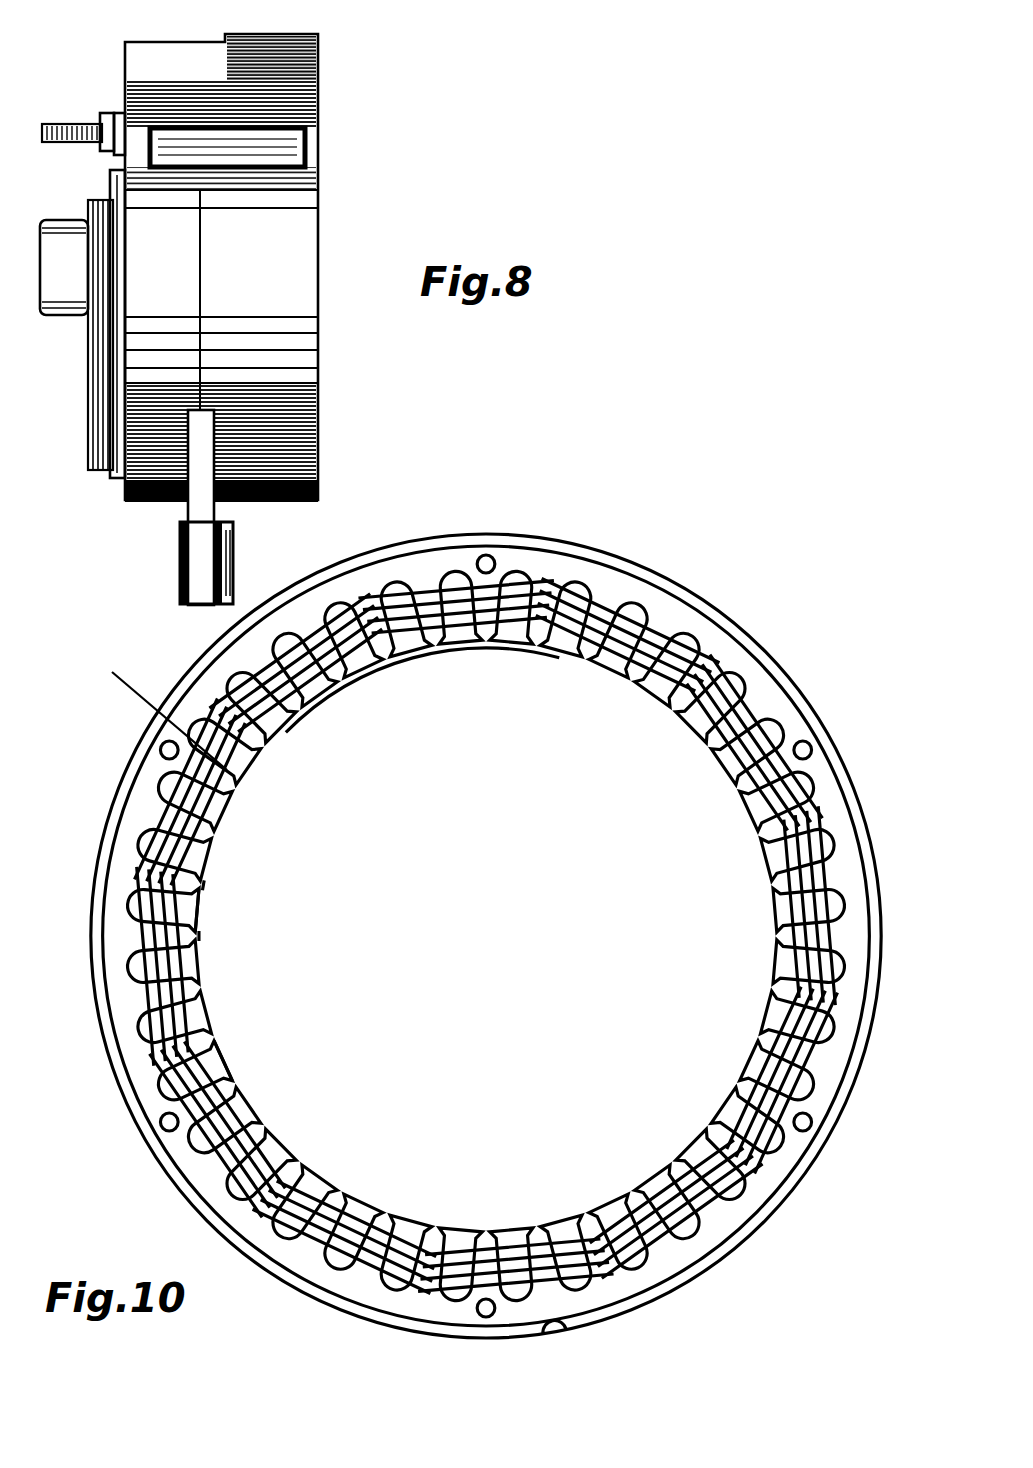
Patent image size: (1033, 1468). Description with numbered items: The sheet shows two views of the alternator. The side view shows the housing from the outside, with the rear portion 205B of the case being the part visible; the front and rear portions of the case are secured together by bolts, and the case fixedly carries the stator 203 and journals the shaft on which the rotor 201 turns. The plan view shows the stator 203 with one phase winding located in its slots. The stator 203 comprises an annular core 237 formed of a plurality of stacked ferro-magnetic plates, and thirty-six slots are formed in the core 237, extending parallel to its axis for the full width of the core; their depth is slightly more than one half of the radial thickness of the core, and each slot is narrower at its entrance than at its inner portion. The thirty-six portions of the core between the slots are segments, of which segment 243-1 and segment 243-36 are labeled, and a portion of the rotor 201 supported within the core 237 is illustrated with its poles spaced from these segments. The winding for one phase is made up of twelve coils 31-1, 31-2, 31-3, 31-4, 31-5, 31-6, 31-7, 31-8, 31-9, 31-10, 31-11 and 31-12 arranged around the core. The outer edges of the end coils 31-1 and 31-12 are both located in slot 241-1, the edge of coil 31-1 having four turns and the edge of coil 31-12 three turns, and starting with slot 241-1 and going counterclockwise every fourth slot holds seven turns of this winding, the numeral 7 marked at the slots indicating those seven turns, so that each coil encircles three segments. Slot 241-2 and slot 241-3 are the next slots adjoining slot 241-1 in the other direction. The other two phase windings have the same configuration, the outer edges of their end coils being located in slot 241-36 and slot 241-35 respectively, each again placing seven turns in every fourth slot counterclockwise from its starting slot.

In FIG. 8, the rear portion of case 205B is at (303, 257).
In FIG. 10, the stator 203 is at (727, 613).
In FIG. 10, the annular core 237 is at (662, 588).
In FIG. 10, the rotor 201 is at (427, 657).
In FIG. 10, the slot 241-35 is at (160, 777).
In FIG. 10, the slot 241-36 is at (140, 836).
In FIG. 10, the slot 241-1 is at (125, 905).
In FIG. 10, the slot 241-2 is at (128, 965).
In FIG. 10, the slot 241-3 is at (140, 1045).
In FIG. 10, the segment 243-36 is at (197, 885).
In FIG. 10, the segment 243-1 is at (195, 930).
In FIG. 10, the slot wedge 7 is at (192, 905).
In FIG. 10, the coil 31-1 is at (150, 1000).
In FIG. 10, the coil 31-2 is at (215, 1160).
In FIG. 10, the coil 31-3 is at (370, 1258).
In FIG. 10, the coil 31-4 is at (547, 1277).
In FIG. 10, the coil 31-5 is at (720, 1225).
In FIG. 10, the coil 31-6 is at (807, 1057).
In FIG. 10, the coil 31-7 is at (848, 1075).
In FIG. 10, the coil 31-8 is at (763, 703).
In FIG. 10, the coil 31-9 is at (602, 610).
In FIG. 10, the coil 31-10 is at (427, 590).
In FIG. 10, the coil 31-11 is at (260, 670).
In FIG. 10, the coil 31-12 is at (165, 790).